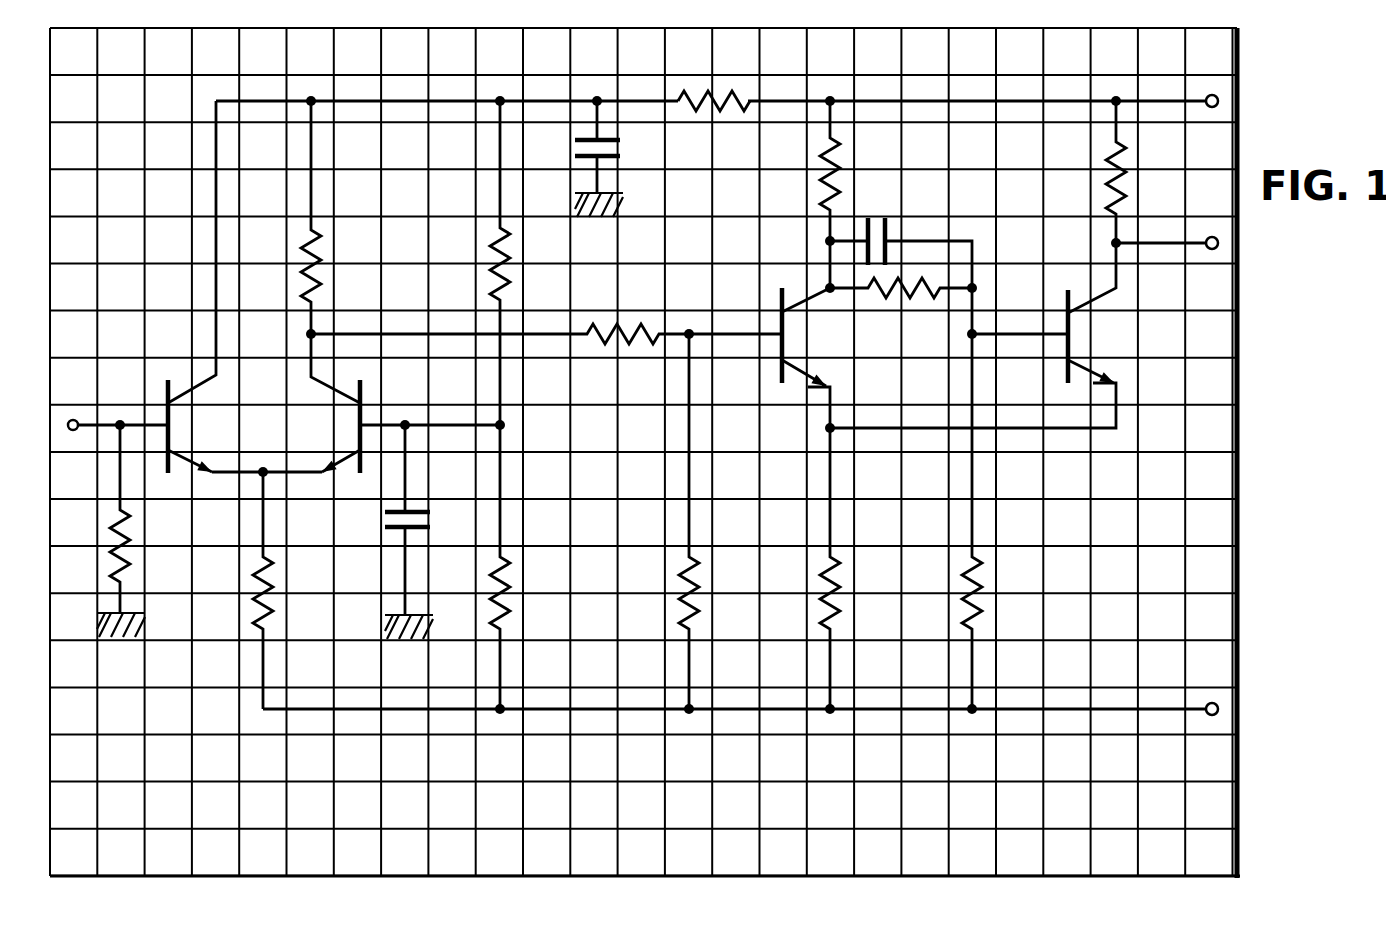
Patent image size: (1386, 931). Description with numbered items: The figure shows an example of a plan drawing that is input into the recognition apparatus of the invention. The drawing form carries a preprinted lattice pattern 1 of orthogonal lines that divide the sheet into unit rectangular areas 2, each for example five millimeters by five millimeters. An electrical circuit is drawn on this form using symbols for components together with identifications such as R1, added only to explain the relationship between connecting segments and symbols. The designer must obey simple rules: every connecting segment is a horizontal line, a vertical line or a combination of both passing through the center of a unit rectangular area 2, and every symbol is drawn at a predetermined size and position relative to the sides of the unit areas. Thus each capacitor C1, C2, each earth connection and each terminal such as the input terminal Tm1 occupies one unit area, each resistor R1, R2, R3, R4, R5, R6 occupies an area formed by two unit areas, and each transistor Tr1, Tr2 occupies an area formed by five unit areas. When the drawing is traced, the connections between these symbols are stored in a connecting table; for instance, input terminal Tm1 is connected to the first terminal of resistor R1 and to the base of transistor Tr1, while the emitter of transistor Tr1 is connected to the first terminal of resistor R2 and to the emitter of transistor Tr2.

The preprinted lattice pattern 1 is at (1247, 335).
The unit rectangular area 2 is at (1220, 533).
The input terminal Tm1 is at (75, 432).
The transistor Tr1 is at (165, 385).
The transistor Tr2 is at (363, 388).
The resistor R1 is at (132, 525).
The resistor R2 is at (273, 573).
The resistor R3 is at (318, 253).
The resistor R4 is at (507, 250).
The resistor R5 is at (513, 577).
The resistor R6 is at (642, 327).
The capacitor C1 is at (423, 497).
The capacitor C2 is at (615, 155).